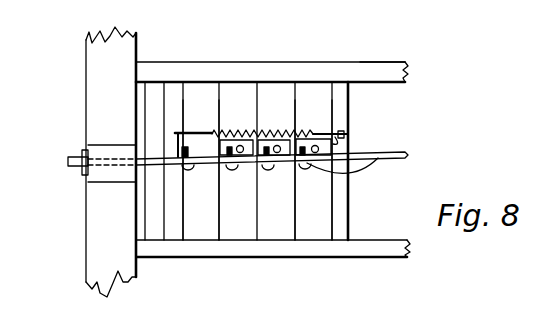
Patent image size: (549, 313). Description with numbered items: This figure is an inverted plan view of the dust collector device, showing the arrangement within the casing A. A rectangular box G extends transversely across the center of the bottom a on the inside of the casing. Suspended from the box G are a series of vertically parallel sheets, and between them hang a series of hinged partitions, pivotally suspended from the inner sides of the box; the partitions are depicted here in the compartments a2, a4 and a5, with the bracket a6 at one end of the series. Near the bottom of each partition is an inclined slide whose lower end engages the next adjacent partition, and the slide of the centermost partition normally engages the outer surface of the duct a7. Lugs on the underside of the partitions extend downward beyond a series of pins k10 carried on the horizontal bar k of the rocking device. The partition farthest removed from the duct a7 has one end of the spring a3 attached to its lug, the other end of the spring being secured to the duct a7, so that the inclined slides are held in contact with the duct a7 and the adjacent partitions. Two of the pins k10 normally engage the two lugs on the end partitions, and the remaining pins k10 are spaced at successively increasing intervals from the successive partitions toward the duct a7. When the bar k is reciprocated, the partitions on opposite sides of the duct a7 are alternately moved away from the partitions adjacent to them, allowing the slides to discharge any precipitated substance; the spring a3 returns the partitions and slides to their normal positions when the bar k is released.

The wall / frame A is at (107, 93).
The bottom a is at (120, 58).
The partitions a2 is at (308, 95).
The spring a3 is at (315, 130).
The compartment a4 is at (202, 227).
The compartment a5 is at (318, 225).
The bracket a6 is at (182, 137).
The duct a7 is at (340, 93).
The rectangular box G is at (385, 72).
The horizontal bar k is at (398, 165).
The pins k10 is at (378, 158).